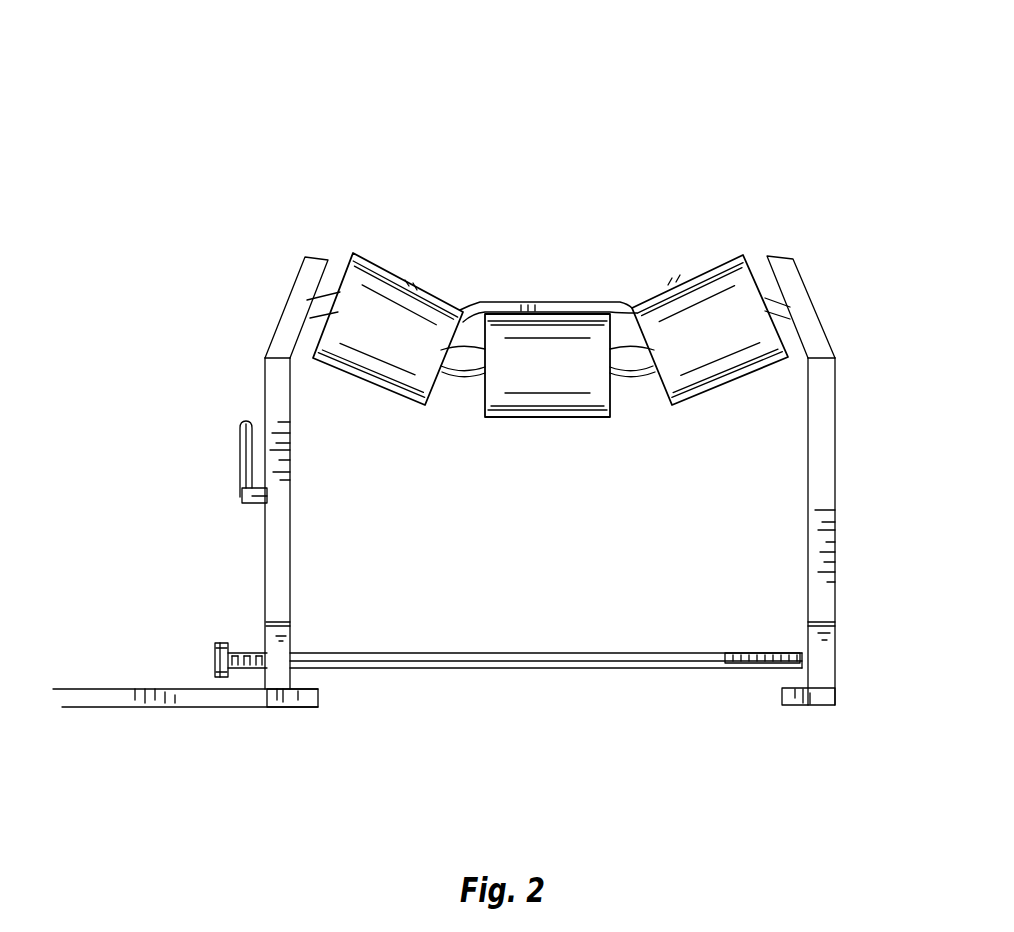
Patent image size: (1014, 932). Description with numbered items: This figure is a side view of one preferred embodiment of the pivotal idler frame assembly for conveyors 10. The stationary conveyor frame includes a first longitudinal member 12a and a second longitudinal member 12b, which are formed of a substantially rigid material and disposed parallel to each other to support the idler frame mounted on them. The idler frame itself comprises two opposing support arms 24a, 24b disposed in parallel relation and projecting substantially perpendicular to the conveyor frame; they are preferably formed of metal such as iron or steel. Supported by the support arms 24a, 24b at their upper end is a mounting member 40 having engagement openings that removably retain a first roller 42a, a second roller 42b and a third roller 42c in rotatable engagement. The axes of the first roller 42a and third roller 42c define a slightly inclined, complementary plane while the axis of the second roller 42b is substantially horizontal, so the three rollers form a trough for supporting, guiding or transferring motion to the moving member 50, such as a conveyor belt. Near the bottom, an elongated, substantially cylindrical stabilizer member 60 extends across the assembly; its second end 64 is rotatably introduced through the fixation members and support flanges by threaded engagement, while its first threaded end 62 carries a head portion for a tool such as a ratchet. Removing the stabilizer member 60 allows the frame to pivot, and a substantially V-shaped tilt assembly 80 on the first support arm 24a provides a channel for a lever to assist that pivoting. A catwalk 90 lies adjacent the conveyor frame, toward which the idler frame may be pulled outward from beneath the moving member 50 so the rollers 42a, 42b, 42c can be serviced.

The pivotal idler frame assembly for conveyors 10 is at (679, 207).
The first longitudinal member 12a is at (293, 708).
The second longitudinal member 12b is at (800, 708).
The first support arm 24a is at (278, 395).
The second support arm 24b is at (836, 490).
The mounting member 40 is at (467, 374).
The first roller 42a is at (405, 339).
The second roller 42b is at (568, 379).
The third roller 42c is at (726, 355).
The moving member 50 is at (558, 303).
The stabilizer member 60 is at (561, 669).
The first threaded end 62 is at (218, 655).
The second end 64 is at (800, 654).
The tilt assembly 80 is at (242, 498).
The catwalk 90 is at (135, 708).